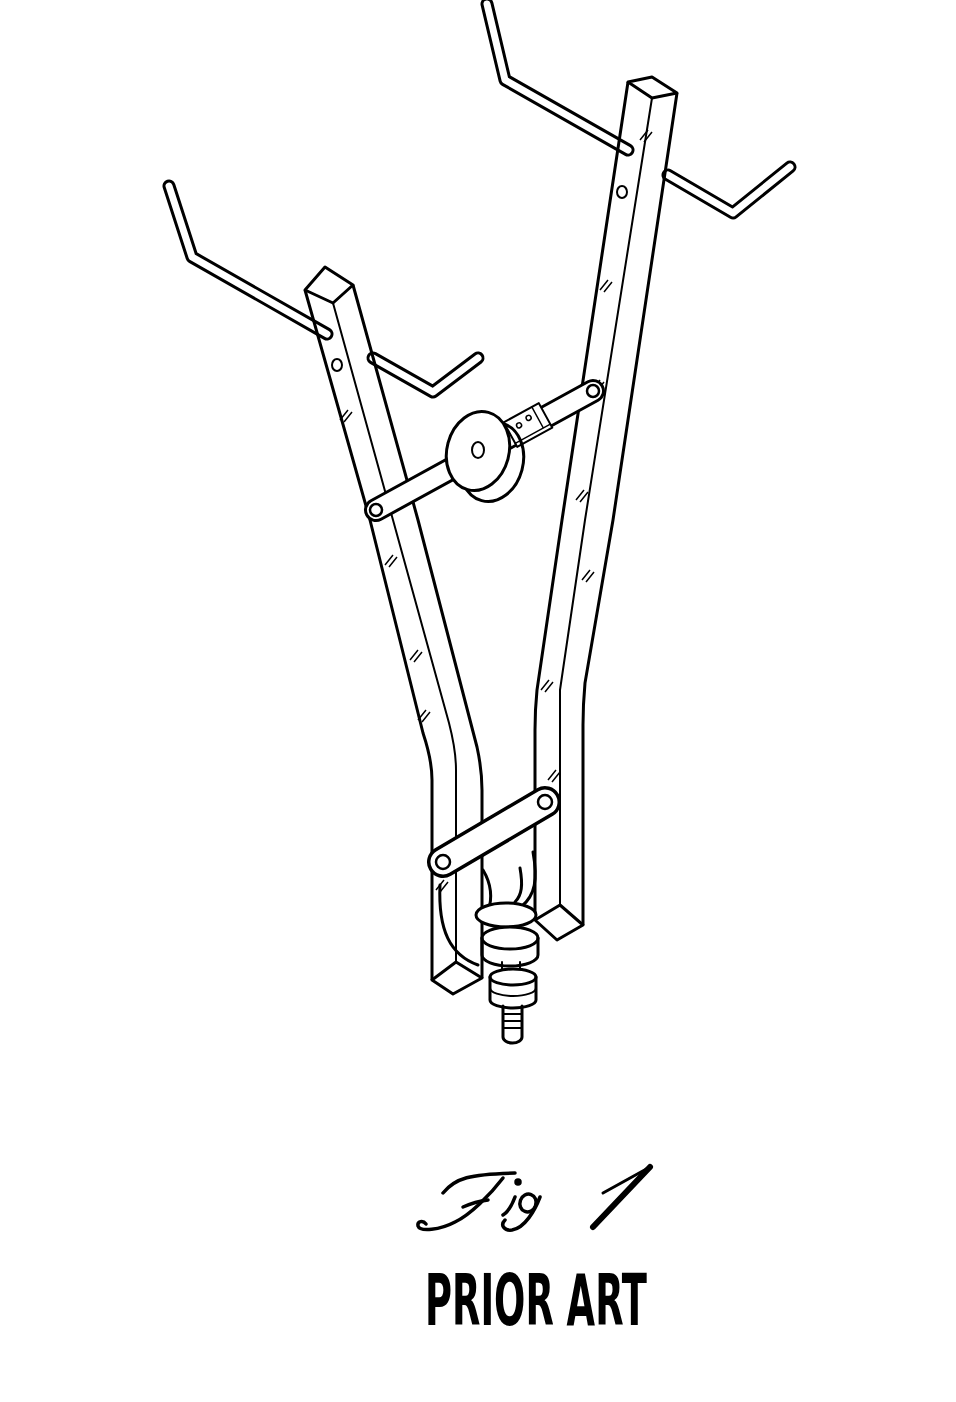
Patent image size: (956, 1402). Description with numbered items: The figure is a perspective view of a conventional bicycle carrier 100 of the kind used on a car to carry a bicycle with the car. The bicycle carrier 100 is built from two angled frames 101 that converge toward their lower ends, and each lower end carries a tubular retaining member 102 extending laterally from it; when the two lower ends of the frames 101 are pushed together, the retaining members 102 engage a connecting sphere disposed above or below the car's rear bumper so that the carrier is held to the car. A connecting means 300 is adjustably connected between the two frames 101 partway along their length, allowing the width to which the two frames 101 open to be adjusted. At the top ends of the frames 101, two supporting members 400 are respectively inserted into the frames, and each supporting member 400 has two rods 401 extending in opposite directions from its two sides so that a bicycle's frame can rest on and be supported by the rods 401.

The bicycle carrier 100 is at (650, 563).
The angled frame 101 is at (380, 596).
The tubular retaining member 102 is at (458, 920).
The connecting means 300 is at (507, 400).
The supporting member 400 is at (683, 118).
The rod 401 is at (200, 273).